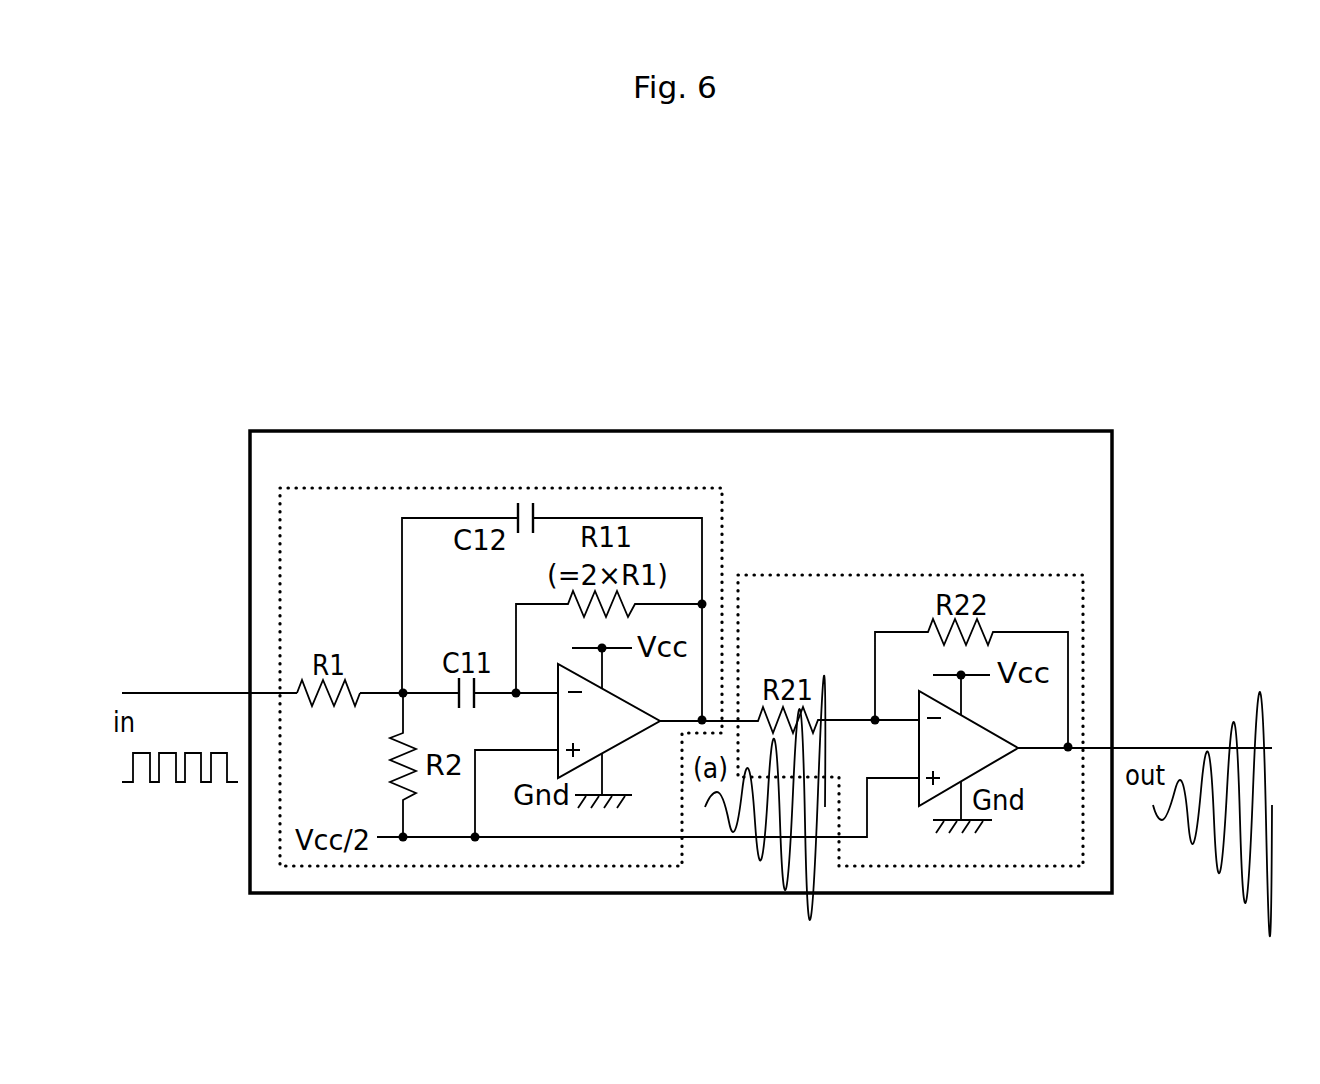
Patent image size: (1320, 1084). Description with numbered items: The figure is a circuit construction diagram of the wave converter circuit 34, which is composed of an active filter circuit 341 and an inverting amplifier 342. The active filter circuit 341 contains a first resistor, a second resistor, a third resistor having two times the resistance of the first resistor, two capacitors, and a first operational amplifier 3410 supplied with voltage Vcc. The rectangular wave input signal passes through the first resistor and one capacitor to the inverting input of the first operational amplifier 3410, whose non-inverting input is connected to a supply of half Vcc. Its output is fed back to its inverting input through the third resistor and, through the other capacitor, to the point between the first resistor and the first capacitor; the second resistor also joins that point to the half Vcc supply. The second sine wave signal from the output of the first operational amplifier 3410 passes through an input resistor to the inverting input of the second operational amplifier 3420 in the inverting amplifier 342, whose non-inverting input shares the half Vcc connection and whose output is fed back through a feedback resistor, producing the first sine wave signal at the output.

The wave converter circuit 34 is at (608, 430).
The active filter circuit 341 is at (720, 487).
The inverting amplifier 342 is at (850, 573).
The first operational amplifier 3410 is at (558, 742).
The second operational amplifier 3420 is at (918, 765).